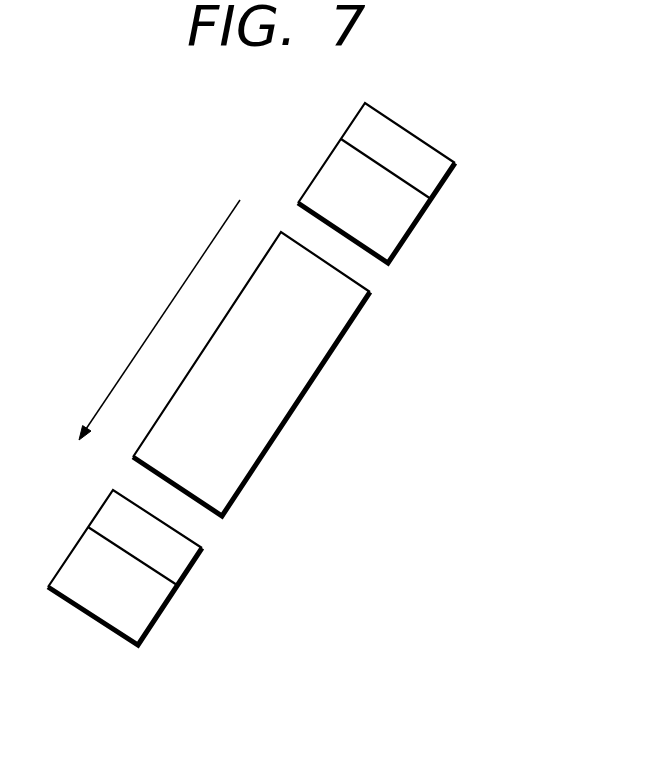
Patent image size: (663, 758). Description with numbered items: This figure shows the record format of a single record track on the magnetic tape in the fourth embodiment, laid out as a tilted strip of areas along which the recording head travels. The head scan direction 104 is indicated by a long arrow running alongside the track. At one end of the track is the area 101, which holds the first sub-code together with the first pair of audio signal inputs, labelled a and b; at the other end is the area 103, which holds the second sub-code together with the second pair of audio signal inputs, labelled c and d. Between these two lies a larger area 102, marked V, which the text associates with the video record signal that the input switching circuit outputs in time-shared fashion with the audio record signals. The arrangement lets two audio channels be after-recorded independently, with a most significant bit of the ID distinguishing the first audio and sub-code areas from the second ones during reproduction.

The area 101 is at (443, 187).
The intermediate block V 102 is at (358, 315).
The area 103 is at (183, 575).
The direction of head scan 104 is at (150, 335).